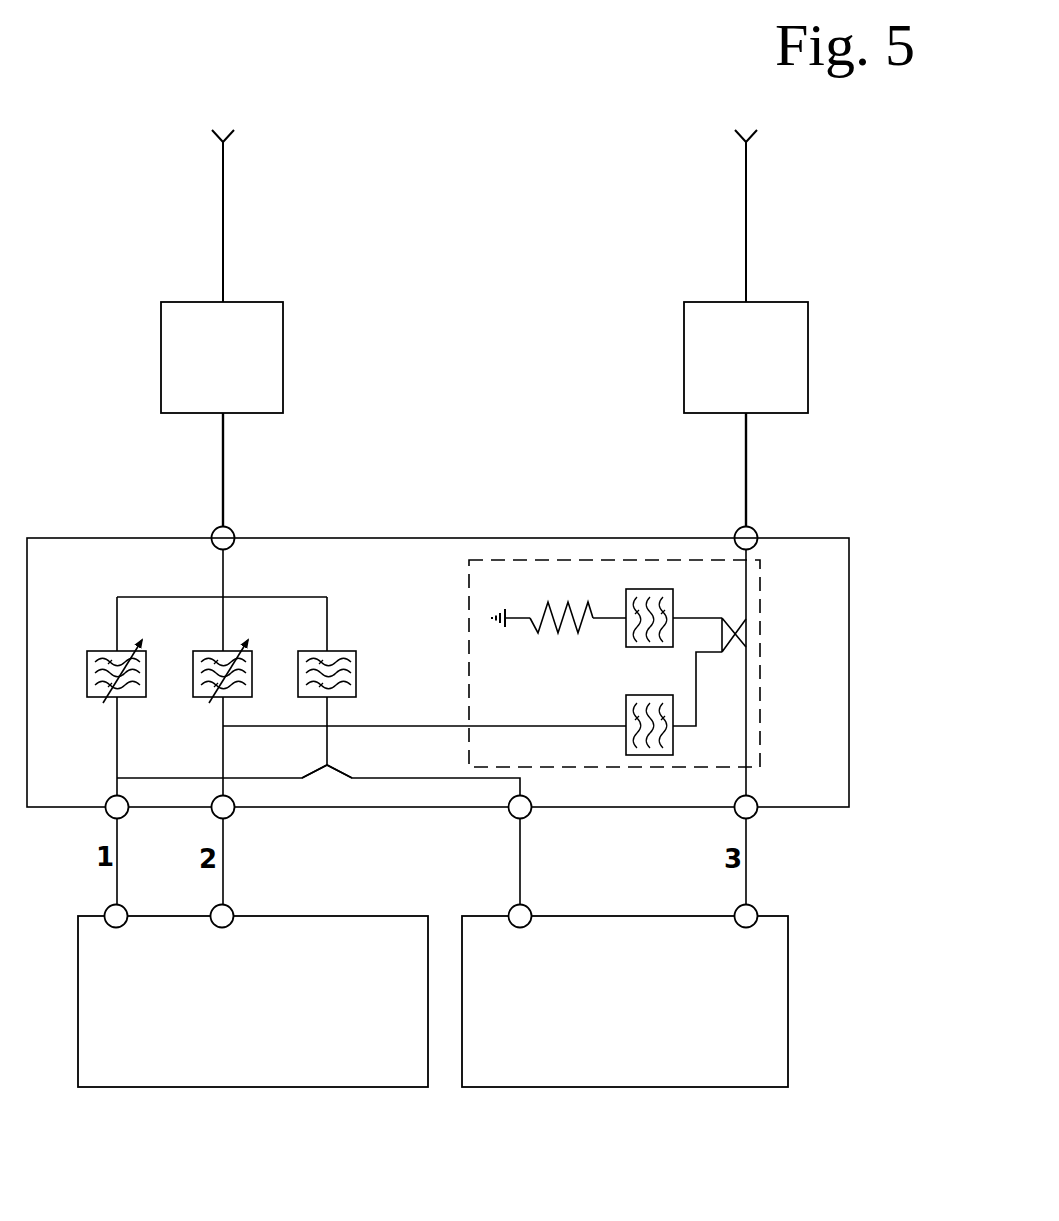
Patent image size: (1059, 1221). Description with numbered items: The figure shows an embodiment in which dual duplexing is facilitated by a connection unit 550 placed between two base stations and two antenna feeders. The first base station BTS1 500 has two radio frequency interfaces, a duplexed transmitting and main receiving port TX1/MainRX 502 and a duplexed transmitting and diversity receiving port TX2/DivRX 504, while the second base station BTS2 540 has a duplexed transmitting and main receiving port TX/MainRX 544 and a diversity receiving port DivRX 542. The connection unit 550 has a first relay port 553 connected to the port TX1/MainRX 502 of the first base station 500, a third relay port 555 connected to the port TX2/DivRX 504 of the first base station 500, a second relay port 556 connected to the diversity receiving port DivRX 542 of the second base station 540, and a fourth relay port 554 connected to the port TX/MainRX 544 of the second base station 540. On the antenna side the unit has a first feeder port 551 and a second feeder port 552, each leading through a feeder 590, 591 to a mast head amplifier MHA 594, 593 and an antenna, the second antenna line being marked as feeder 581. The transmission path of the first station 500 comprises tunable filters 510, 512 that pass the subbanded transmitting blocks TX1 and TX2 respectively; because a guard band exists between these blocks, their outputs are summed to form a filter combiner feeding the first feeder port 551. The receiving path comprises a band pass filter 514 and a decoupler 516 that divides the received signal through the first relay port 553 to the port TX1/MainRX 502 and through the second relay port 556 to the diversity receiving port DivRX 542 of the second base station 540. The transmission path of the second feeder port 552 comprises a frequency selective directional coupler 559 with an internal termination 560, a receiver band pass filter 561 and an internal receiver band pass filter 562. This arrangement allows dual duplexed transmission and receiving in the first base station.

The first base station BTS1 500 is at (219, 977).
The duplexed transmitting and main receiving port TX1/MainRX 502 is at (165, 895).
The duplexed transmitting and diversity receiving port TX2/DivRX 504 is at (270, 895).
The tunable filter 510 is at (92, 700).
The tunable filter 512 is at (197, 700).
The band pass filter 514 is at (350, 648).
The decoupler 516 is at (329, 770).
The second base station BTS2 540 is at (663, 977).
The diversity receiving port DivRX 542 is at (532, 908).
The duplexed transmitting and main receiving port TX/MainRX 544 is at (757, 908).
The connection unit 550 is at (849, 538).
The first feeder port 551 is at (214, 528).
The second feeder port 552 is at (757, 533).
The first relay port 553 is at (107, 817).
The fourth relay port 554 is at (733, 820).
The third relay port 555 is at (213, 817).
The second relay port 556 is at (508, 820).
The frequency selective directional coupler 559 is at (651, 663).
The internal termination 560 is at (567, 602).
The receiver band pass filter 561 is at (620, 627).
The internal receiver band pass filter 562 is at (622, 703).
The antenna feeder cable 581 is at (748, 212).
The first feeder cable 590 is at (223, 463).
The second feeder cable 591 is at (748, 463).
The second mast head amplifier MHA 593 is at (808, 358).
The first mast head amplifier MHA 594 is at (161, 362).